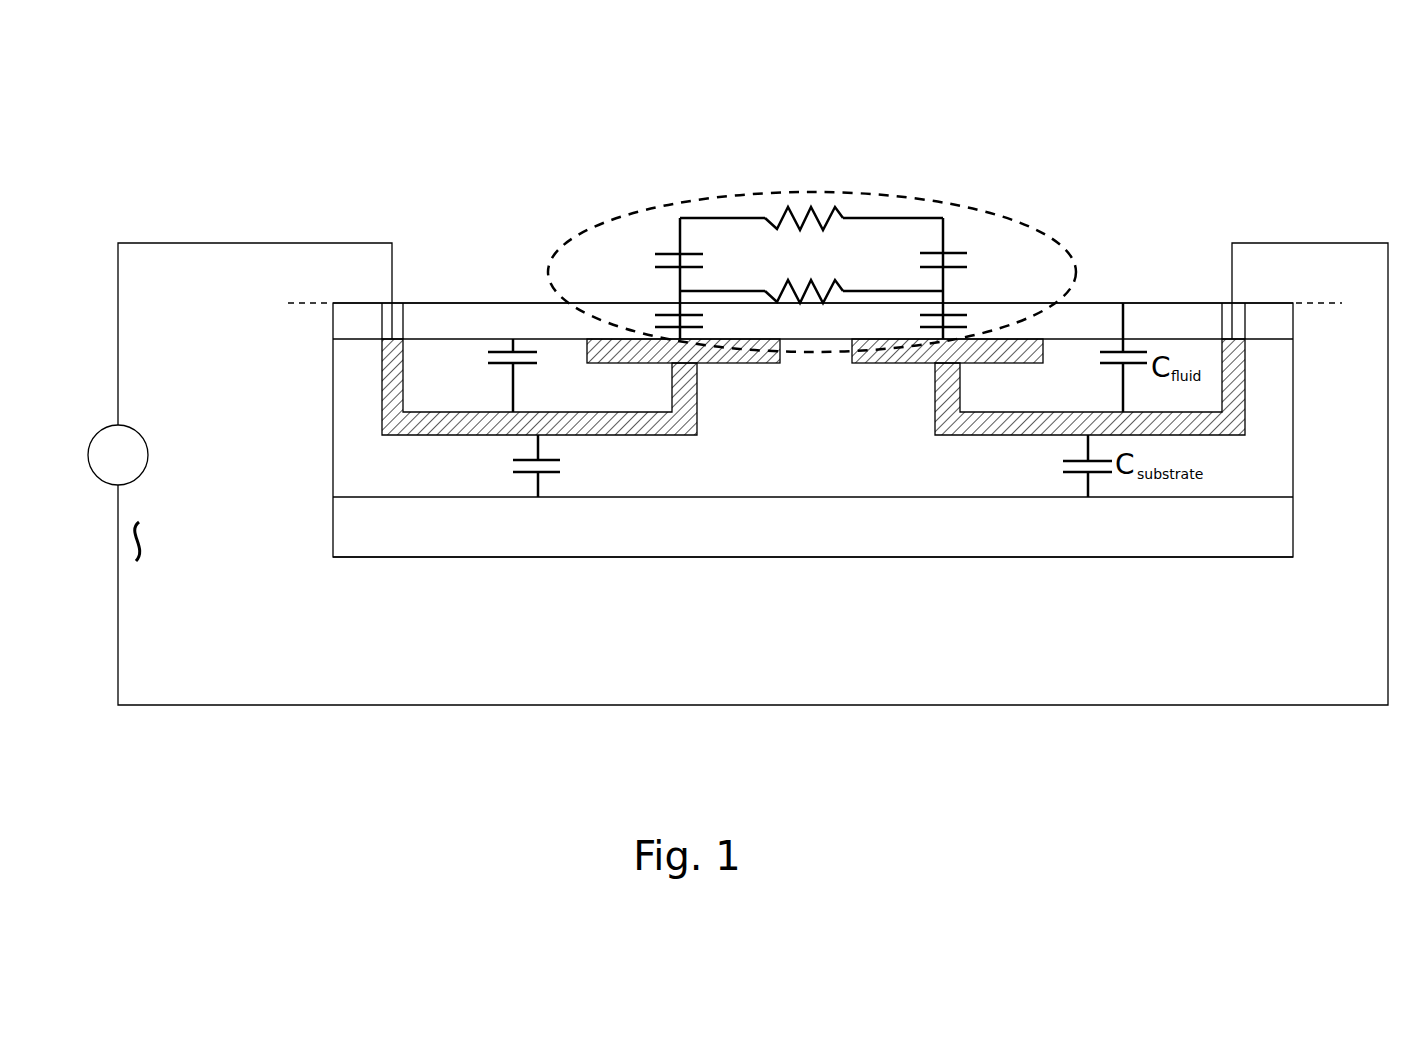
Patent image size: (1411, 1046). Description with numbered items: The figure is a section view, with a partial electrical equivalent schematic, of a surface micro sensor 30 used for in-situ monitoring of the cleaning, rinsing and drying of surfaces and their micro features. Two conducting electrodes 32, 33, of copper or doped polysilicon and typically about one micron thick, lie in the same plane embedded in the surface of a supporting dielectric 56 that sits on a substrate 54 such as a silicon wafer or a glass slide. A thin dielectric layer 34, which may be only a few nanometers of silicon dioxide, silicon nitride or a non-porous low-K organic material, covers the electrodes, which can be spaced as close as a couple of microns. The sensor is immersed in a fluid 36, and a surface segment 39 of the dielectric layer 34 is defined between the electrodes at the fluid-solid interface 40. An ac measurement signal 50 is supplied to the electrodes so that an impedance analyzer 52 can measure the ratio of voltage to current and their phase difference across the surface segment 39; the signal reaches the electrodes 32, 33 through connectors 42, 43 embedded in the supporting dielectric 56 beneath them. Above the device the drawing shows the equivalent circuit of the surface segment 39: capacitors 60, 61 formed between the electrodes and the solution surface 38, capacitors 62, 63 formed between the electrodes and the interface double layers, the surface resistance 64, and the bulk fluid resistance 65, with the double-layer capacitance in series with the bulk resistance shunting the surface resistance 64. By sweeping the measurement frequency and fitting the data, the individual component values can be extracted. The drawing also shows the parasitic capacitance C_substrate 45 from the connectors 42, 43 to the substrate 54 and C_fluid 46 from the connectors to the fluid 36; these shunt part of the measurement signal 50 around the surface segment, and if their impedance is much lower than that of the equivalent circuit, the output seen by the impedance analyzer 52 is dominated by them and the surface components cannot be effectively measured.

The surface micro sensor 30 is at (358, 130).
The conducting electrode 32 is at (610, 335).
The conducting electrode 33 is at (1044, 336).
The dielectric layer 34 is at (465, 315).
The fluid 36 is at (813, 219).
The solution surface 38 is at (357, 302).
The surface segment 39 is at (910, 192).
The fluid-solid interface 40 is at (286, 306).
The connector 42 is at (442, 440).
The connector 43 is at (1018, 438).
The substrate parasitic capacitance 45 is at (540, 470).
The fluid parasitic capacitance 46 is at (500, 350).
The ac measurement signal 50 is at (149, 531).
The impedance analyzer 52 is at (146, 448).
The substrate 54 is at (1248, 543).
The supporting dielectric 56 is at (1212, 458).
The capacitor 60 is at (678, 337).
The capacitor 61 is at (963, 337).
The capacitor 62 is at (680, 257).
The capacitor 63 is at (943, 322).
The surface resistance 64 is at (800, 263).
The bulk fluid resistance 65 is at (823, 202).